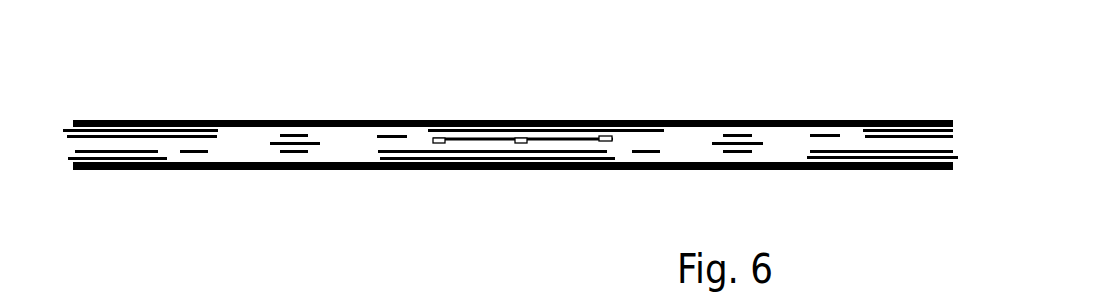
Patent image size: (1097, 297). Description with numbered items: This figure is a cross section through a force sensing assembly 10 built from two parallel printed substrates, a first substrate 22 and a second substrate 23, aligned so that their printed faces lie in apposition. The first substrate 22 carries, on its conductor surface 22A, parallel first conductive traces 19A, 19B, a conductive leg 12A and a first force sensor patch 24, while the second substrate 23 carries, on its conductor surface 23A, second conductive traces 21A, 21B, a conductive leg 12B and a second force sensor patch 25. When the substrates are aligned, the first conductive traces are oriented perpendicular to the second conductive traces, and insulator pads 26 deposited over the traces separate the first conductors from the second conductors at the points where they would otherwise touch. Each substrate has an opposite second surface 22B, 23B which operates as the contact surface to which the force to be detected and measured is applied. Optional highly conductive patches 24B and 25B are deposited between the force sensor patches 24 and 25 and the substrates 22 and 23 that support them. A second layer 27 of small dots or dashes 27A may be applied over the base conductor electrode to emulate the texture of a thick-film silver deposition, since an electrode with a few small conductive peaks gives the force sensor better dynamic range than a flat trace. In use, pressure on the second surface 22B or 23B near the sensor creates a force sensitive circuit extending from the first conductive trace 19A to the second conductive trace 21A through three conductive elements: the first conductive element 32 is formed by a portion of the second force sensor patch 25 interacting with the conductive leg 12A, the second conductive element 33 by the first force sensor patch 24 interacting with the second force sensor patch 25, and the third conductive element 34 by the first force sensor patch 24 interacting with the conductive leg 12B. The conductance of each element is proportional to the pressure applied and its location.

The force sensing assembly 10 is at (912, 93).
The first substrate 22 is at (510, 85).
The second substrate 23 is at (497, 203).
The conductor surface 22A is at (232, 152).
The second surface 22B is at (232, 108).
The conductor surface 23A is at (694, 136).
The second surface 23B is at (906, 188).
The first conductive trace 19A is at (312, 95).
The first conductive trace 19B is at (757, 96).
The insulator pad 26 is at (544, 108).
The second conductive trace 21A is at (776, 185).
The second conductive trace 21B is at (277, 195).
The conductive leg 12A is at (421, 99).
The conductive leg 12B is at (687, 186).
The first force sensor patch 24 is at (523, 101).
The highly conductive patch 24B is at (546, 94).
The second force sensor patch 25 is at (462, 182).
The highly conductive patch 25B is at (497, 197).
The second layer 27 is at (640, 140).
The dots or dashes 27A is at (509, 105).
The first conductive element 32 is at (425, 183).
The second conductive element 33 is at (618, 183).
The third conductive element 34 is at (678, 183).